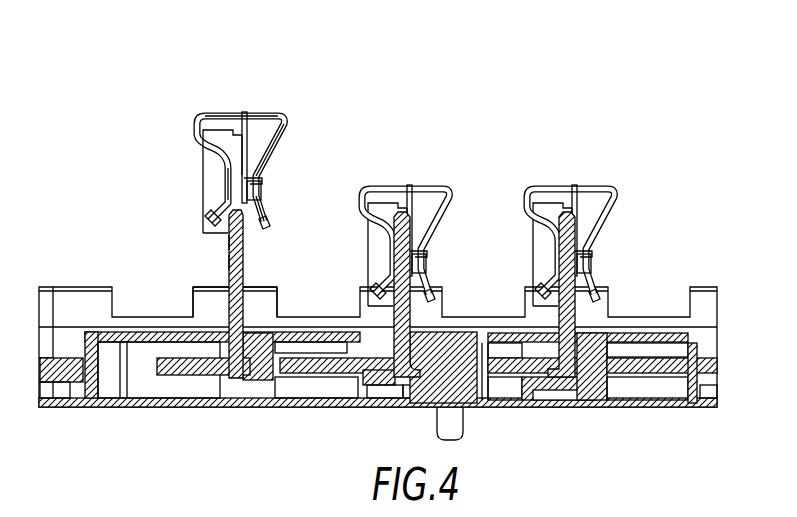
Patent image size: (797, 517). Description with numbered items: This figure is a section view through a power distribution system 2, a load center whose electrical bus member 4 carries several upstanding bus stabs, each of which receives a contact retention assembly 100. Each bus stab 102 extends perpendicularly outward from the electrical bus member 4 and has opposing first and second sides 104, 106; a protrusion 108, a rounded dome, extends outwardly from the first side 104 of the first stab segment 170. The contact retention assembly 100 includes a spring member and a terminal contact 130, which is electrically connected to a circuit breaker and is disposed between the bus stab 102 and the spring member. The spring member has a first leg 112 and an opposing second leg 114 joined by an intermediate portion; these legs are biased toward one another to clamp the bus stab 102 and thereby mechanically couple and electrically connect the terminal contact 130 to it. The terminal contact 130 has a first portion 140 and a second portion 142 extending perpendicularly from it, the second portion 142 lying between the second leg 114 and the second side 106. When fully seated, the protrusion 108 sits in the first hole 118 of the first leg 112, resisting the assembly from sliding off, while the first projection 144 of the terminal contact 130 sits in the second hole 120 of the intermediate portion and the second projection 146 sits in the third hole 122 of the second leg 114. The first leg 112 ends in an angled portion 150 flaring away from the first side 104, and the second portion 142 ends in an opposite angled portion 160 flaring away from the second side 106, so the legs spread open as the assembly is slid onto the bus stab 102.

The power distribution system 2 is at (612, 444).
The electrical bus member 4 is at (177, 384).
The contact retention assembly 100 is at (218, 205).
The bus stab 102 is at (248, 300).
The first side 104 is at (215, 296).
The second side 106 is at (258, 355).
The protrusion 108 is at (226, 262).
The first leg 112 is at (208, 130).
The second leg 114 is at (264, 202).
The first hole 118 is at (233, 177).
The second hole 120 is at (250, 118).
The third hole 122 is at (258, 193).
The terminal contact 130 is at (218, 158).
The first portion 140 is at (208, 173).
The second portion 142 is at (262, 143).
The first projection 144 is at (245, 110).
The second projection 146 is at (260, 180).
The angled portion 150 is at (212, 216).
The angled portion 160 is at (254, 232).
The first stab segment 170 is at (226, 243).